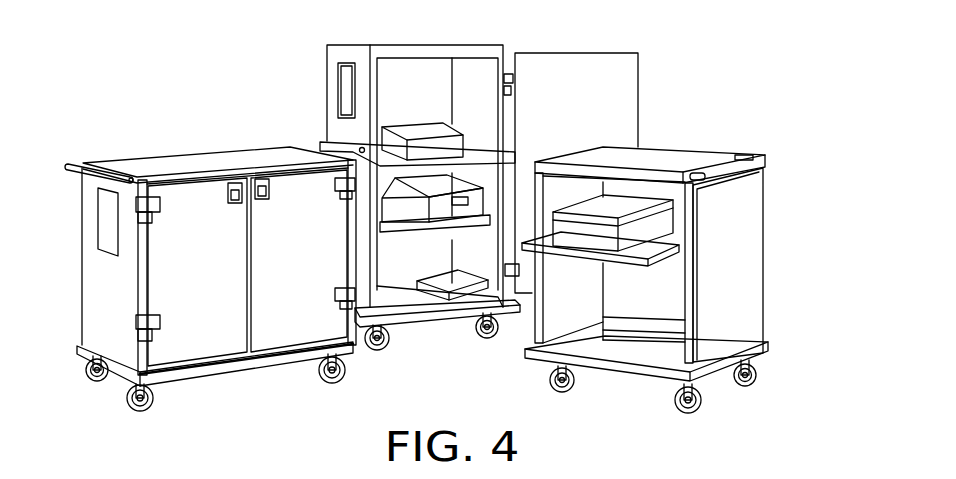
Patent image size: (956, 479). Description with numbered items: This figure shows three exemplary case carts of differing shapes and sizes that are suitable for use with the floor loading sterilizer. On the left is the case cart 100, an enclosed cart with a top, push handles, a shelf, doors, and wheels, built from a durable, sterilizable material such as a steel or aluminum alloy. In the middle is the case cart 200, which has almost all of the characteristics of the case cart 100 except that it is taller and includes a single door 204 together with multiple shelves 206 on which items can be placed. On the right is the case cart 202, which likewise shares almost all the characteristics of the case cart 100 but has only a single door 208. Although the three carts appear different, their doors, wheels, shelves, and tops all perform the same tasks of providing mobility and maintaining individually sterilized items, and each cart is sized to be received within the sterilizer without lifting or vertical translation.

The case cart 100 is at (160, 145).
The case cart 200 is at (385, 226).
The case cart 202 is at (674, 251).
The single door 204 is at (602, 92).
The shelves 206 is at (415, 293).
The single door 208 is at (740, 262).